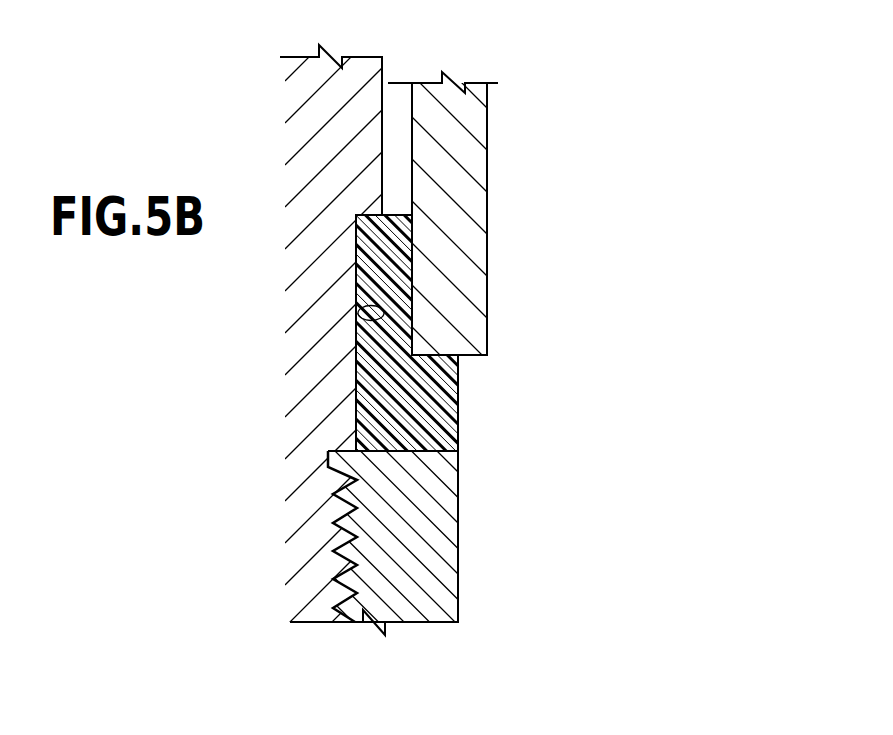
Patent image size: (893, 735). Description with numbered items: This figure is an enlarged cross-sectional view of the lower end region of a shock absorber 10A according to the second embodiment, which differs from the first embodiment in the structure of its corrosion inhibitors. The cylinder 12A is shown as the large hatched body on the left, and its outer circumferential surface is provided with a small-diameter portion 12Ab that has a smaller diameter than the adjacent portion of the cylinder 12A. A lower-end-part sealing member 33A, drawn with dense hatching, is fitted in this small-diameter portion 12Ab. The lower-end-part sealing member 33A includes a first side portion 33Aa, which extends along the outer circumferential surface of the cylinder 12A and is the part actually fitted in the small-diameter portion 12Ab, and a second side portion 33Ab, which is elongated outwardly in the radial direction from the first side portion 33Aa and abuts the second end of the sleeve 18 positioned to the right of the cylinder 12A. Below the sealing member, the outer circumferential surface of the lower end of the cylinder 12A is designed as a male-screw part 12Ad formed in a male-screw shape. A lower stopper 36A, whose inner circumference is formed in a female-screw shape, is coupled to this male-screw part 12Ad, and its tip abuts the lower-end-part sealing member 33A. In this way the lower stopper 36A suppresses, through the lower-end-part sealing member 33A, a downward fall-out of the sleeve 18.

The shock absorber 10A is at (684, 134).
The cylinder 12A is at (383, 65).
The small-diameter portion 12Ab is at (362, 307).
The male-screw part 12Ad is at (347, 547).
The sleeve 18 is at (487, 165).
The lower-end-part sealing member 33A is at (618, 265).
The first side portion 33Aa is at (413, 268).
The second side portion 33Ab is at (458, 402).
The lower stopper 36A is at (458, 535).